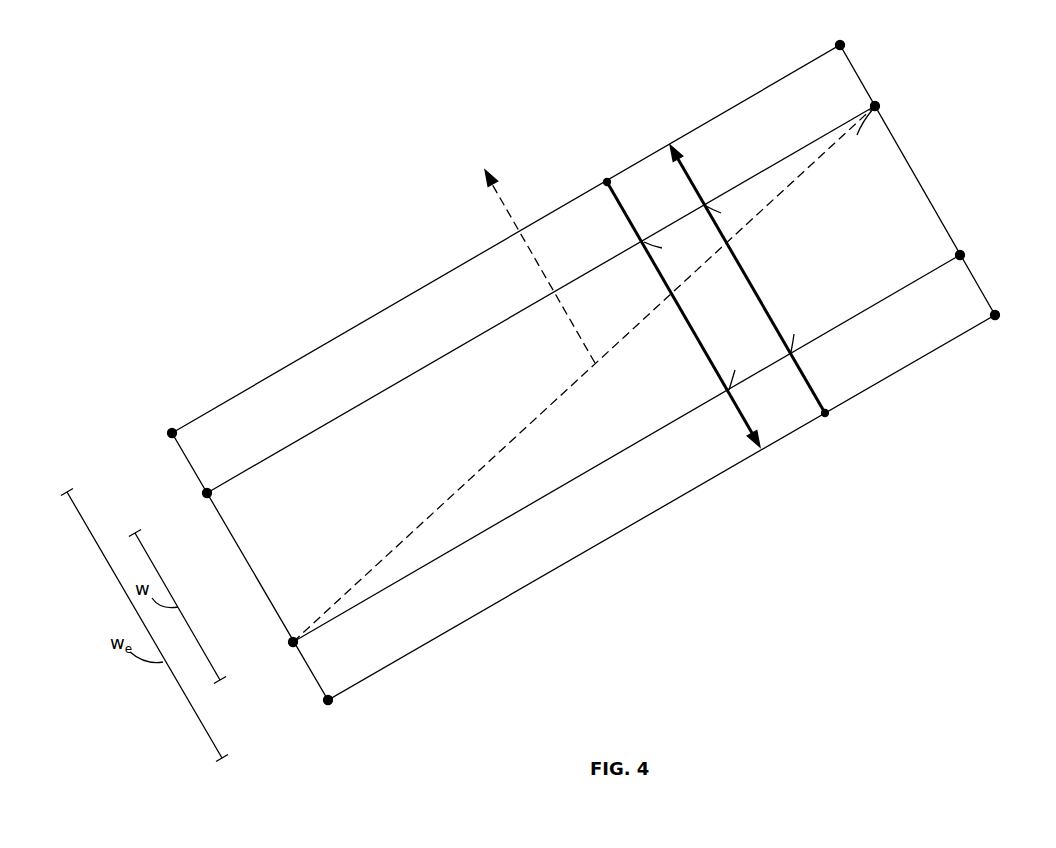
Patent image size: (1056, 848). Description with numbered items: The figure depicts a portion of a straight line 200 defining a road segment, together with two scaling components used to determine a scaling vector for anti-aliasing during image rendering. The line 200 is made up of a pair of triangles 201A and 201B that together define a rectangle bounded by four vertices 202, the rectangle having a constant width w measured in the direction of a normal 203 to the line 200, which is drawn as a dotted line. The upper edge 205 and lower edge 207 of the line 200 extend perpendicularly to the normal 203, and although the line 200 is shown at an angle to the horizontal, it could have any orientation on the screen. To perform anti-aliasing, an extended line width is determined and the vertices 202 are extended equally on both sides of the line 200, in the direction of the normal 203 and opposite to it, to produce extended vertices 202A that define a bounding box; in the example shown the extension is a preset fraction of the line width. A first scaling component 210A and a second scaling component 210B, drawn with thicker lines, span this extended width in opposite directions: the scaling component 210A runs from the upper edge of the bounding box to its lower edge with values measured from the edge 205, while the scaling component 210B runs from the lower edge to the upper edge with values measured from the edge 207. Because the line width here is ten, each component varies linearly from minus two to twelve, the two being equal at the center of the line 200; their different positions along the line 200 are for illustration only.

The line 200 is at (915, 175).
The triangle 201A is at (356, 491).
The triangle 201B is at (621, 434).
The vertices 202 is at (297, 644).
The extended line vertices 202A is at (837, 43).
The normal 203 is at (500, 206).
The upper edge 205 is at (392, 384).
The lower edge 207 is at (478, 537).
The first scaling component 210A is at (678, 305).
The second scaling component 210B is at (746, 272).